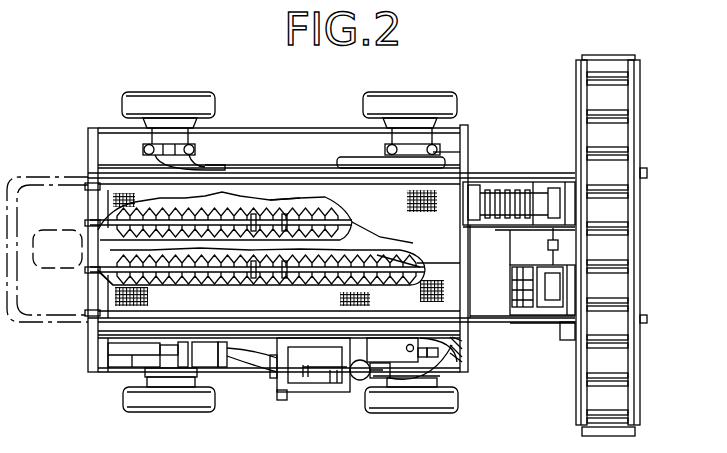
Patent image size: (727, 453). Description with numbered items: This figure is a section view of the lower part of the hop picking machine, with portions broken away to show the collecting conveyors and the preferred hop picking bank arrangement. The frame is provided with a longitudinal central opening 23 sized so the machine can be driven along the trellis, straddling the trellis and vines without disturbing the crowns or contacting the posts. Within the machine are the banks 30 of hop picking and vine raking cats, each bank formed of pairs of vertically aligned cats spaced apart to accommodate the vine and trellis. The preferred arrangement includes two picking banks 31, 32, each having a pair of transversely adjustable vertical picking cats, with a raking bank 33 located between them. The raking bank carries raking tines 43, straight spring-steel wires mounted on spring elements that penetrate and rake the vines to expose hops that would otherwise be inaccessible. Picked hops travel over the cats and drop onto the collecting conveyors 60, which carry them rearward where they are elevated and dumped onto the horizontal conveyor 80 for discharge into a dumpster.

The longitudinal central opening 23 is at (293, 277).
The banks of hop picking and vine raking cats 30 is at (266, 196).
The picking bank 31 is at (118, 257).
The picking bank 32 is at (383, 256).
The raking bank 33 is at (257, 280).
The raking tines 43 is at (280, 210).
The collecting conveyors 60 is at (112, 194).
The horizontal conveyor 80 is at (617, 244).